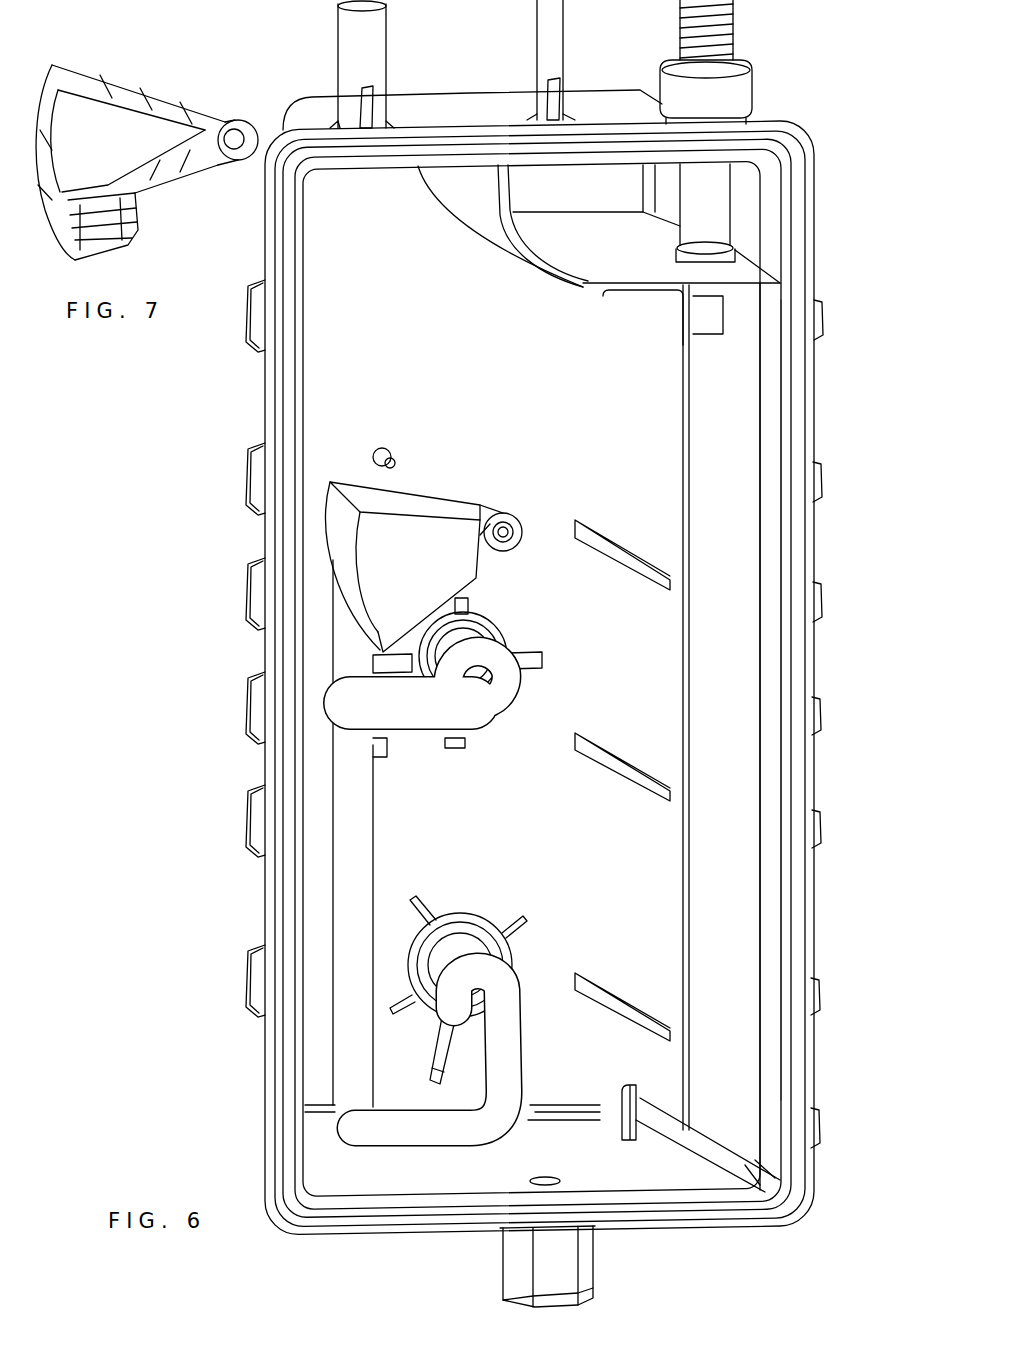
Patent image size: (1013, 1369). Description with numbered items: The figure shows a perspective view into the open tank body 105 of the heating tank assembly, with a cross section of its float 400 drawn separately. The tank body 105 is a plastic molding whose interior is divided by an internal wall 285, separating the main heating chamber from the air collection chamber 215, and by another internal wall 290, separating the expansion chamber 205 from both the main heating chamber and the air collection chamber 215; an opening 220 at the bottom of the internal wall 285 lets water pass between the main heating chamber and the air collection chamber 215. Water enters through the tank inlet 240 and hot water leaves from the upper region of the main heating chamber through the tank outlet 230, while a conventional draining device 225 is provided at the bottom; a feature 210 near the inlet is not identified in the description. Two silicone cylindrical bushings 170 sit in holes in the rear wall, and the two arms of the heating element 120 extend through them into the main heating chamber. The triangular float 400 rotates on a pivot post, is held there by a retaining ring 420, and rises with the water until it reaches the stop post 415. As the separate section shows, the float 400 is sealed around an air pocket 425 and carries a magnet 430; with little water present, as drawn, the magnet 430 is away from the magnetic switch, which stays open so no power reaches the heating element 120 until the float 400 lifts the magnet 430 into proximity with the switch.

In FIG. 6, the tank body 105 is at (812, 380).
In FIG. 6, the heating element 120 is at (340, 905).
In FIG. 6, the silicone cylindrical bushings 170 is at (497, 637).
In FIG. 6, the expansion chamber 205 is at (578, 176).
In FIG. 6, the post 210 is at (725, 208).
In FIG. 6, the air collection chamber 215 is at (733, 640).
In FIG. 6, the opening 220 is at (655, 1090).
In FIG. 6, the draining device 225 is at (590, 1278).
In FIG. 6, the tank outlet 230 is at (378, 66).
In FIG. 6, the tank inlet 240 is at (743, 62).
In FIG. 6, the internal wall 285 is at (687, 497).
In FIG. 6, the internal wall 290 is at (578, 292).
In FIG. 6, the float 400 is at (338, 541).
In FIG. 7, the float 400 is at (148, 42).
In FIG. 6, the stop post 415 is at (392, 458).
In FIG. 6, the retaining ring 420 is at (521, 527).
In FIG. 7, the air pocket 425 is at (117, 128).
In FIG. 7, the magnet 430 is at (113, 220).